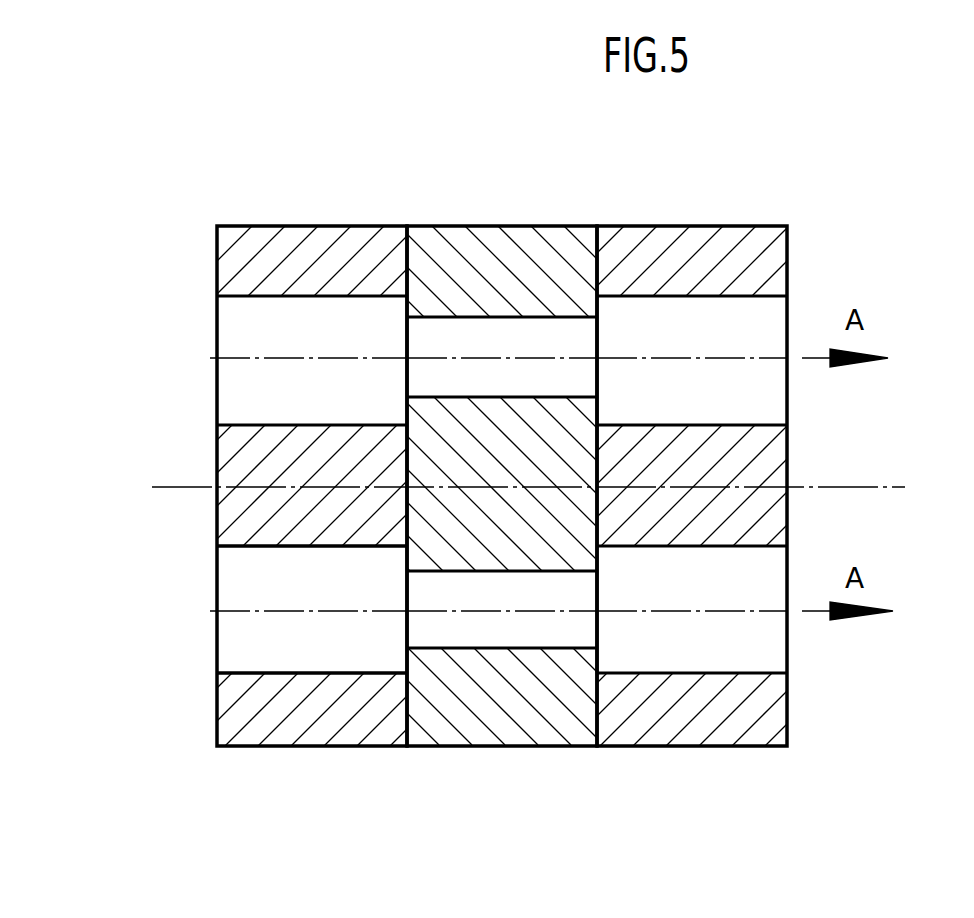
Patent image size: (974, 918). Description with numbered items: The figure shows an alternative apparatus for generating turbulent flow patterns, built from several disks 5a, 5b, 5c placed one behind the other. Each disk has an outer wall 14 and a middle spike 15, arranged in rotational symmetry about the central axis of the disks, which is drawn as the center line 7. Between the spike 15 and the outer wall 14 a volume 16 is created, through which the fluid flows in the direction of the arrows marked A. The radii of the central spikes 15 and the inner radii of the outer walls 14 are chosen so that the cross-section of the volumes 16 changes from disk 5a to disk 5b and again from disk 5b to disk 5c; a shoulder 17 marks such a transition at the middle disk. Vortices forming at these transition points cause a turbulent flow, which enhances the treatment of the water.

The disk 5a is at (357, 727).
The disk 5b is at (527, 722).
The disk 5c is at (683, 722).
The center line / axis 7 is at (890, 488).
The outer wall 14 is at (290, 727).
The spike 15 is at (228, 523).
The volume 16 is at (232, 640).
The shoulder 17 is at (410, 313).